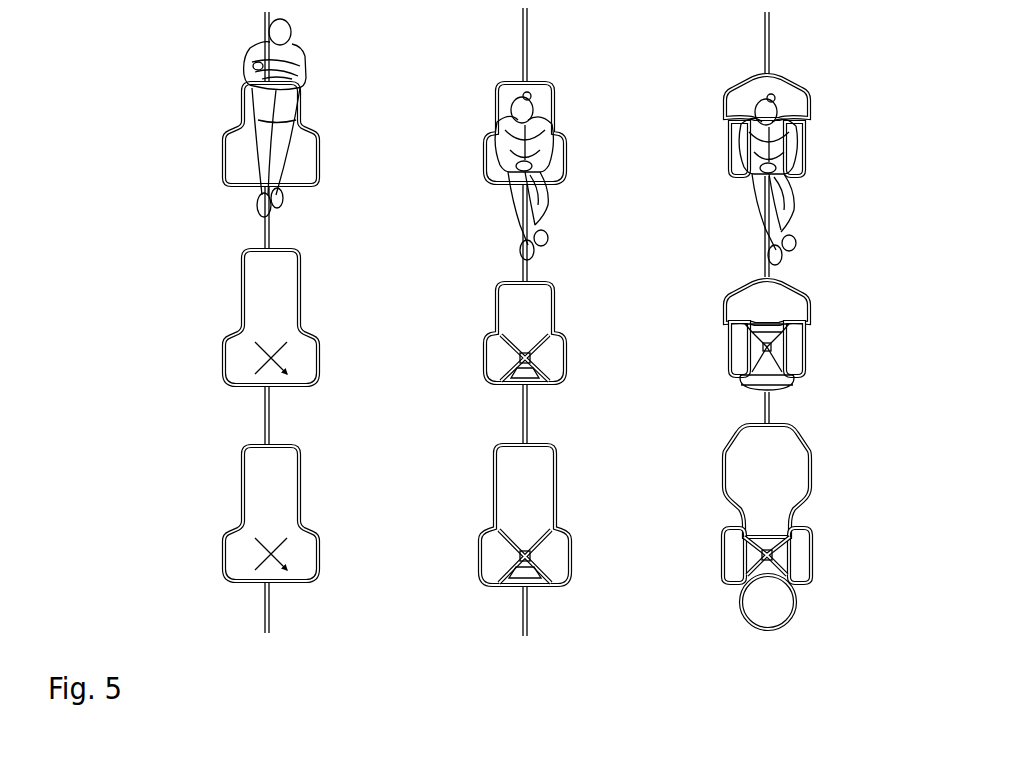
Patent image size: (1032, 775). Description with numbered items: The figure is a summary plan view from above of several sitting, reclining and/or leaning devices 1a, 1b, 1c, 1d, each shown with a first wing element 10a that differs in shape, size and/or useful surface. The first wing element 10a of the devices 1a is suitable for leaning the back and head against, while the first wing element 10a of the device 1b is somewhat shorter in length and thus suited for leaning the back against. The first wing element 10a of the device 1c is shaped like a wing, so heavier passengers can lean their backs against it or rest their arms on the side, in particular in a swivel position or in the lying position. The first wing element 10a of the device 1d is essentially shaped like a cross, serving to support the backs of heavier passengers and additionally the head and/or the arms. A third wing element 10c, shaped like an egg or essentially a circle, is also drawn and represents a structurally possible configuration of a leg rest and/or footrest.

The sitting, reclining and/or leaning device 1a is at (212, 284).
The sitting, reclining and/or leaning device 1b is at (477, 310).
The sitting, reclining and/or leaning device 1c is at (710, 323).
The sitting, reclining and/or leaning device 1d is at (715, 505).
The first wing element 10a is at (267, 300).
The third wing element 10c is at (767, 603).